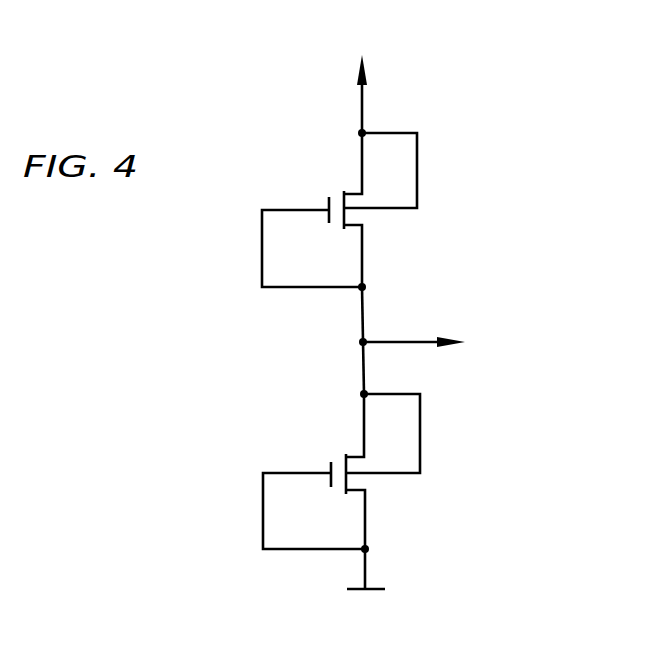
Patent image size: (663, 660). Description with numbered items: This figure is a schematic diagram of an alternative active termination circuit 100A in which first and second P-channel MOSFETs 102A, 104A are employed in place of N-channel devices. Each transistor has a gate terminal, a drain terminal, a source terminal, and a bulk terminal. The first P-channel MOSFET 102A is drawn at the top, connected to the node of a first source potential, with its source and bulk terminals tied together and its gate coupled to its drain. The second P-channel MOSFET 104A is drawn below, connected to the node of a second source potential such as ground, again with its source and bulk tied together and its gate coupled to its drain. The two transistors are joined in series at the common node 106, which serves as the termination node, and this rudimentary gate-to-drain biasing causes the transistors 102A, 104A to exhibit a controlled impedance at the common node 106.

The alternative active termination circuit 100A is at (236, 93).
The first P-channel MOSFET 102A is at (450, 128).
The second P-channel MOSFET 104A is at (453, 552).
The common node 106 is at (433, 338).